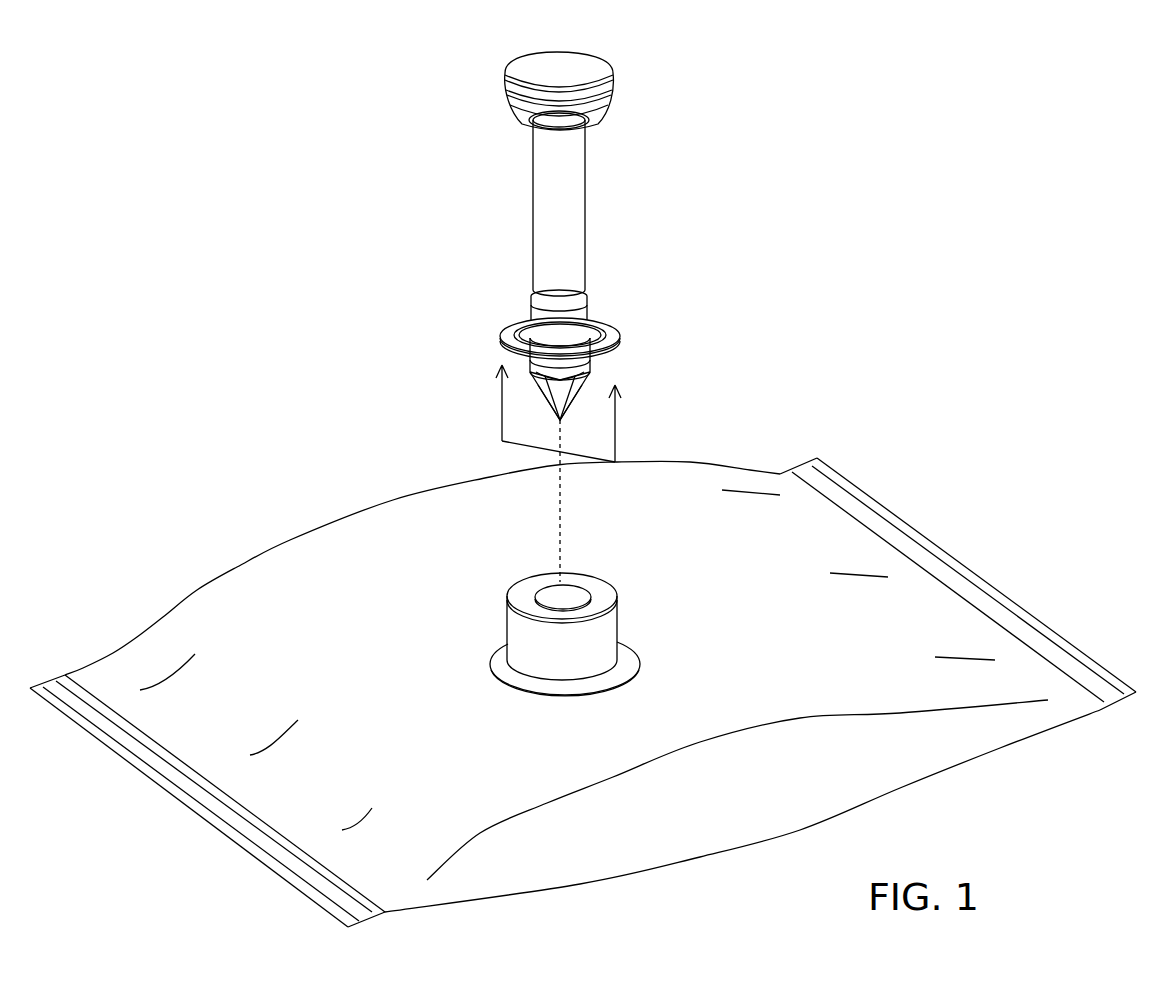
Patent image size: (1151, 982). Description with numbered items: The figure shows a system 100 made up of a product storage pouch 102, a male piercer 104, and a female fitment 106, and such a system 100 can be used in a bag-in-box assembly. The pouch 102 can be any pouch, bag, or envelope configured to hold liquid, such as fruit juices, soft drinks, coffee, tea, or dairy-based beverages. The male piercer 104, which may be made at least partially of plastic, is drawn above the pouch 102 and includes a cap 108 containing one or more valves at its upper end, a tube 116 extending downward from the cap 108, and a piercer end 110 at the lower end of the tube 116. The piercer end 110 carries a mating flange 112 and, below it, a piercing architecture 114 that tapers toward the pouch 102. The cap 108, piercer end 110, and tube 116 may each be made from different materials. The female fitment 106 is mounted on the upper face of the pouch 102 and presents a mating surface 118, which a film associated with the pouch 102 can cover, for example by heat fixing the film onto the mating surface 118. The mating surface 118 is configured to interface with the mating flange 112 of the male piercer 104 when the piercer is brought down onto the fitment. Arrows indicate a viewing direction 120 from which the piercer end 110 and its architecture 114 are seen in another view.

The system 100 is at (698, 45).
The product storage pouch 102 is at (749, 611).
The male piercer 104 is at (488, 208).
The female fitment 106 is at (587, 637).
The cap 108 is at (505, 88).
The piercer end 110 is at (513, 328).
The mating flange 112 is at (613, 343).
The piercing architecture 114 is at (548, 413).
The tube 116 is at (567, 212).
The mating surface 118 is at (524, 598).
The direction 120 is at (615, 427).